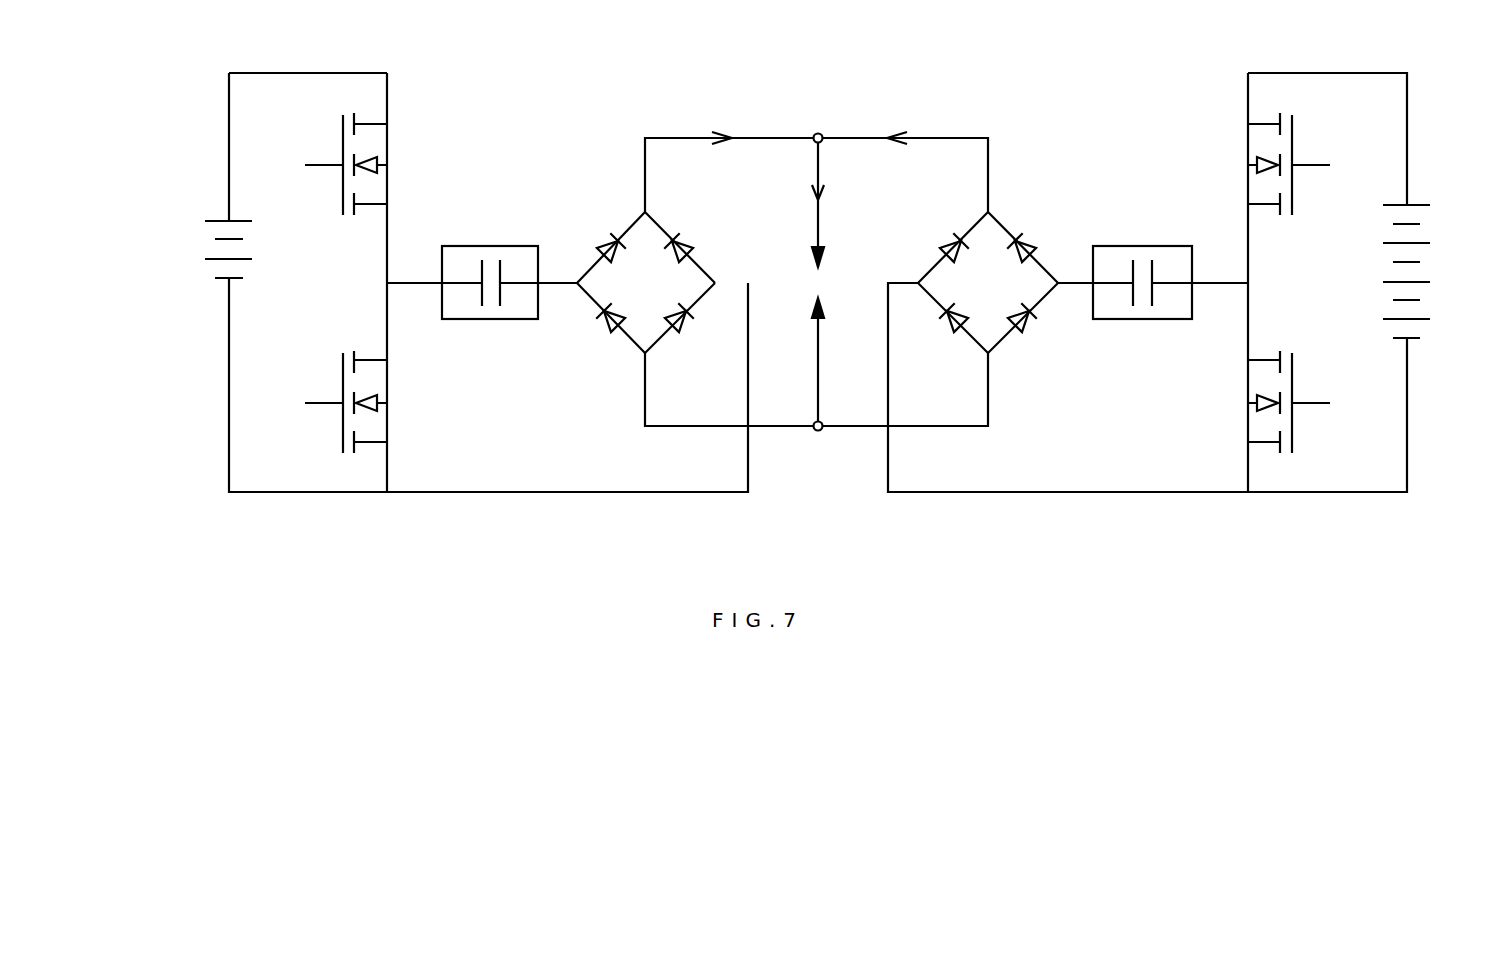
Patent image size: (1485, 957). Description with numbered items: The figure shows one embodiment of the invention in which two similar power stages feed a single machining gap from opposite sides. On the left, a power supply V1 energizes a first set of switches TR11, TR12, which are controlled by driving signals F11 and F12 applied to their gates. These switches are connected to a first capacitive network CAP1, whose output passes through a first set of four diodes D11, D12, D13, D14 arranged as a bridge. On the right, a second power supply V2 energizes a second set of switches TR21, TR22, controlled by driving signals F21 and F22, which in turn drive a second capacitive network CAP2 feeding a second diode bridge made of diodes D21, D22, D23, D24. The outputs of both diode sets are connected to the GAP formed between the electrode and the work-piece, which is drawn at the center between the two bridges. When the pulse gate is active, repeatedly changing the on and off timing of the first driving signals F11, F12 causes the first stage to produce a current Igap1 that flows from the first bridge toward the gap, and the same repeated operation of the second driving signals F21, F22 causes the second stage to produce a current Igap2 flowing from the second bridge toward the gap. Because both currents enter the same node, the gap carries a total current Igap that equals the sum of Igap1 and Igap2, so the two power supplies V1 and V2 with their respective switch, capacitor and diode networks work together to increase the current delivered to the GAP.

The power supply V1 is at (212, 221).
The power supply V2 is at (1422, 207).
The switch TR11 is at (388, 175).
The switch TR12 is at (388, 413).
The switch TR21 is at (1247, 184).
The switch TR22 is at (1247, 416).
The driving signal F11 is at (300, 165).
The driving signal F12 is at (300, 404).
The driving signal F21 is at (1336, 165).
The driving signal F22 is at (1336, 404).
The capacitive network CAP1 is at (515, 246).
The capacitive network CAP2 is at (1165, 246).
The diode D11 is at (600, 239).
The diode D12 is at (603, 325).
The diode D13 is at (687, 243).
The diode D14 is at (687, 327).
The diode D21 is at (942, 240).
The diode D22 is at (945, 325).
The diode D23 is at (1030, 242).
The diode D24 is at (1030, 327).
The gap current Igap1 is at (708, 117).
The gap current Igap2 is at (903, 117).
The total gap current Igap is at (845, 204).
The gap GAP is at (818, 288).